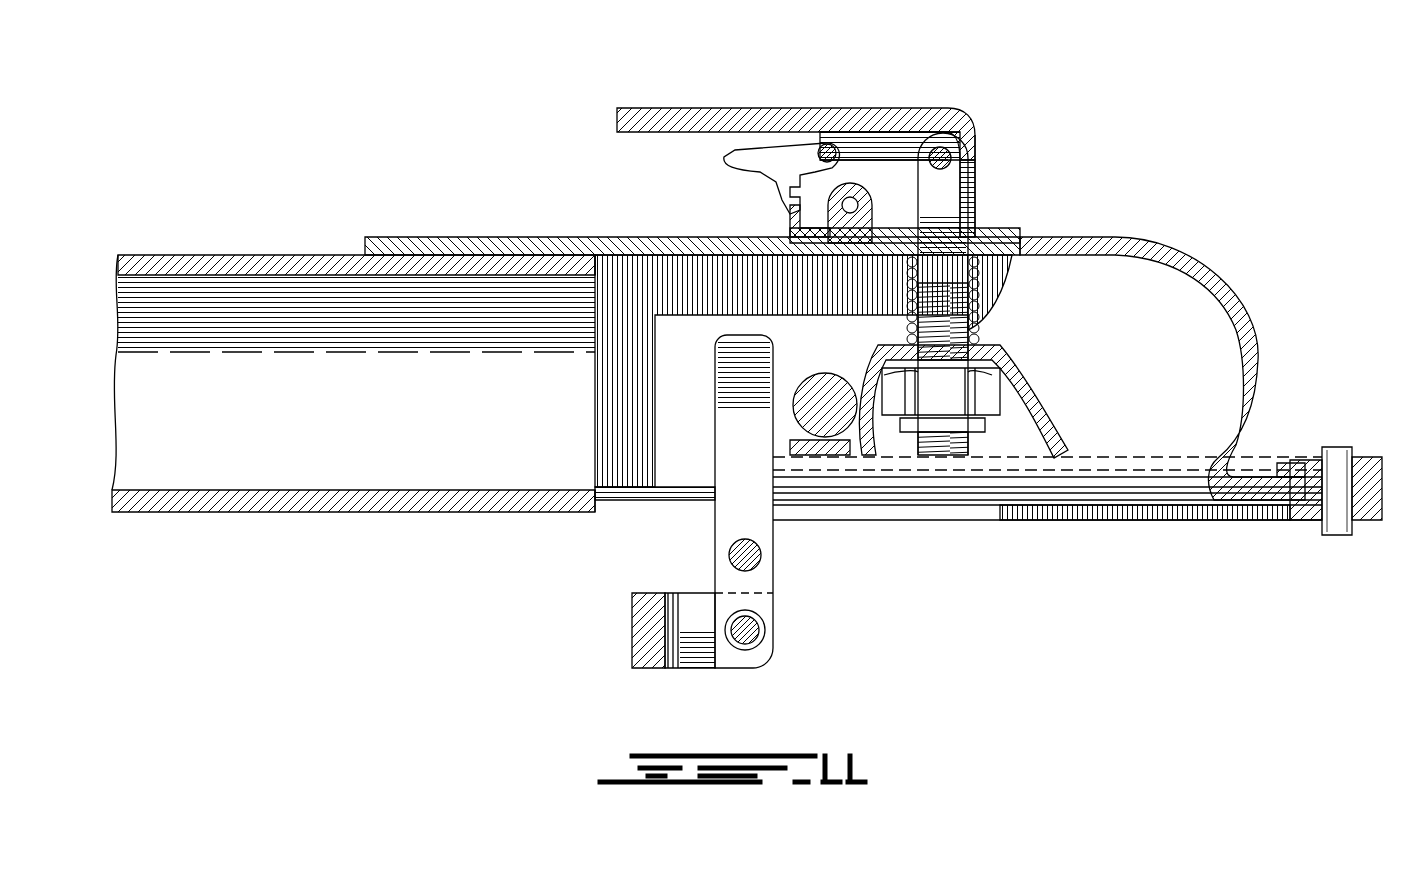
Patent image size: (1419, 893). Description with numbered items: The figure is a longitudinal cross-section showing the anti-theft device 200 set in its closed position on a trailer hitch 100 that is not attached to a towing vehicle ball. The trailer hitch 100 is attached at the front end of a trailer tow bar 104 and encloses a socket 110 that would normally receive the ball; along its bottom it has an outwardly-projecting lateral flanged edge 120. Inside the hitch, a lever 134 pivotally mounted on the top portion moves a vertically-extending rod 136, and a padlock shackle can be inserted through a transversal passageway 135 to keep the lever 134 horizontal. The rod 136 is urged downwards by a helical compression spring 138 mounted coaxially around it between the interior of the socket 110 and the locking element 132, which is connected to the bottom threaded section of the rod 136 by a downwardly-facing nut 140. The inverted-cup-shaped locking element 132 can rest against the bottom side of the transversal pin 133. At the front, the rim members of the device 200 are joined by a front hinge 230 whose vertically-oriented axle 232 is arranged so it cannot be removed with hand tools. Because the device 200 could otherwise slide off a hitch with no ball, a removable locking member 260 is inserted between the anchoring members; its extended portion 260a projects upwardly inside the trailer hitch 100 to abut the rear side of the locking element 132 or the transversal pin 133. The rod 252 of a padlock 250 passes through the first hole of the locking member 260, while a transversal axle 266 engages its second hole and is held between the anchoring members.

The trailer hitch 100 is at (1207, 207).
The trailer tow bar 104 is at (300, 500).
The socket 110 is at (1143, 352).
The lateral flanged edge 120 is at (1275, 480).
The locking element 132 is at (1018, 398).
The transversal pin 133 is at (820, 385).
The lever 134 is at (845, 108).
The transversal passageway 135 is at (850, 205).
The rod 136 is at (956, 178).
The helical compression spring 138 is at (905, 298).
The nut 140 is at (985, 385).
The device 200 is at (1100, 540).
The front hinge 230 is at (1348, 464).
The axle 232 is at (1340, 522).
The padlock 250 is at (606, 632).
The rod 252 is at (760, 635).
The removable locking member 260 is at (765, 585).
The extended portion 260a is at (748, 470).
The axle 266 is at (730, 563).